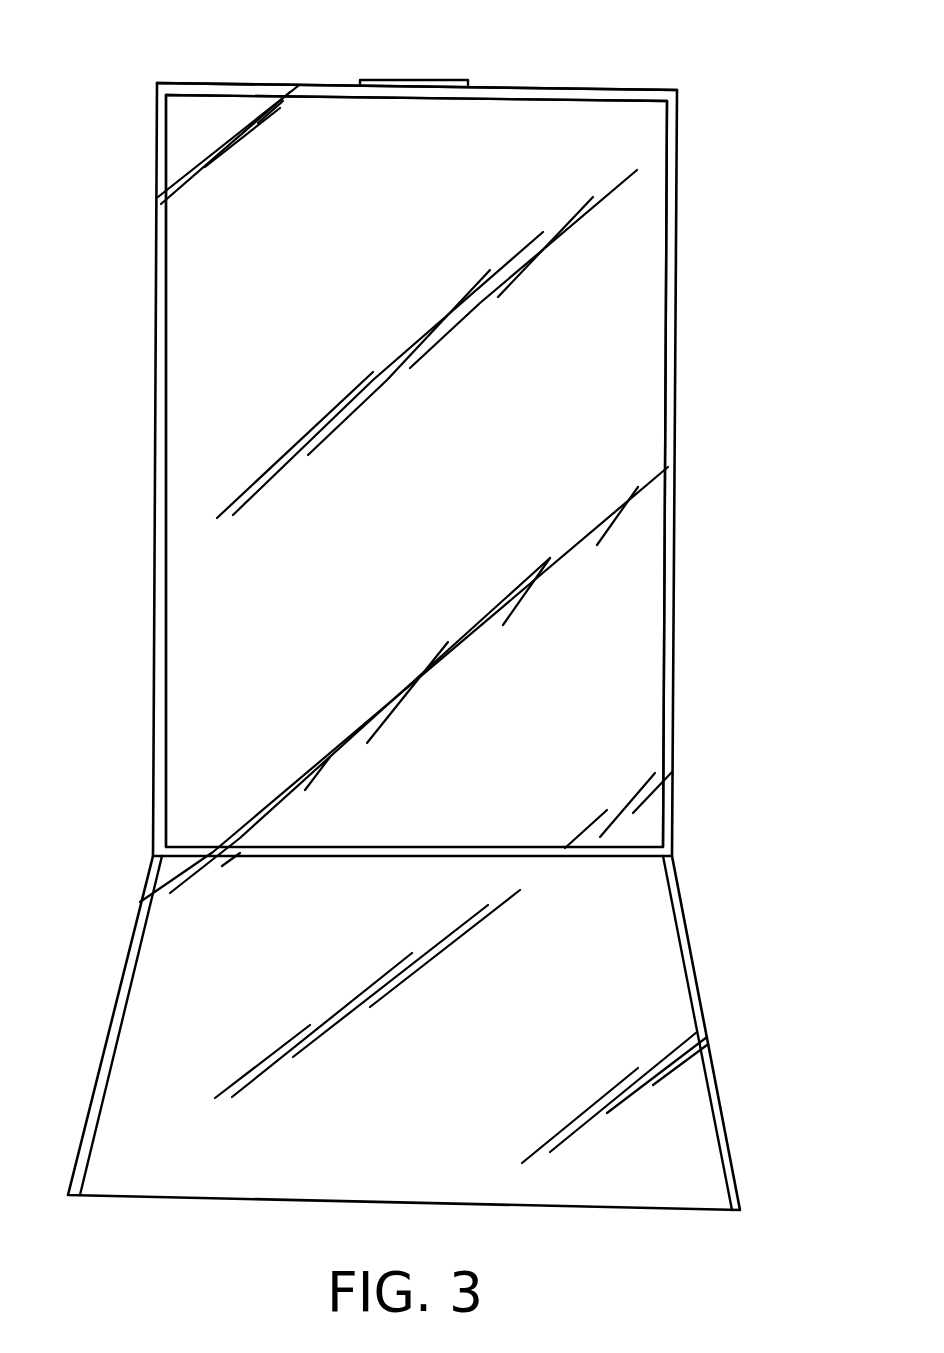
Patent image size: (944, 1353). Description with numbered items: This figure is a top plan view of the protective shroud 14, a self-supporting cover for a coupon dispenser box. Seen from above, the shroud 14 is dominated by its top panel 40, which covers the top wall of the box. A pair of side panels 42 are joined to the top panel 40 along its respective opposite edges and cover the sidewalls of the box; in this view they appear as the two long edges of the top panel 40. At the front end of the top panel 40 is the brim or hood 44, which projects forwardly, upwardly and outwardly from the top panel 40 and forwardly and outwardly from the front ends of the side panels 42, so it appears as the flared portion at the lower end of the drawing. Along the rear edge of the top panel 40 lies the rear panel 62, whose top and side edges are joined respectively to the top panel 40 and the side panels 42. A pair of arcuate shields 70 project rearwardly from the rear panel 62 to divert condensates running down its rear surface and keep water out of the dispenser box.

The protective shroud 14 is at (706, 62).
The top panel 40 is at (645, 623).
The side panels 42 is at (155, 533).
The brim 44 is at (660, 957).
The rear panel 62 is at (567, 88).
The arcuate shields 70 is at (384, 80).